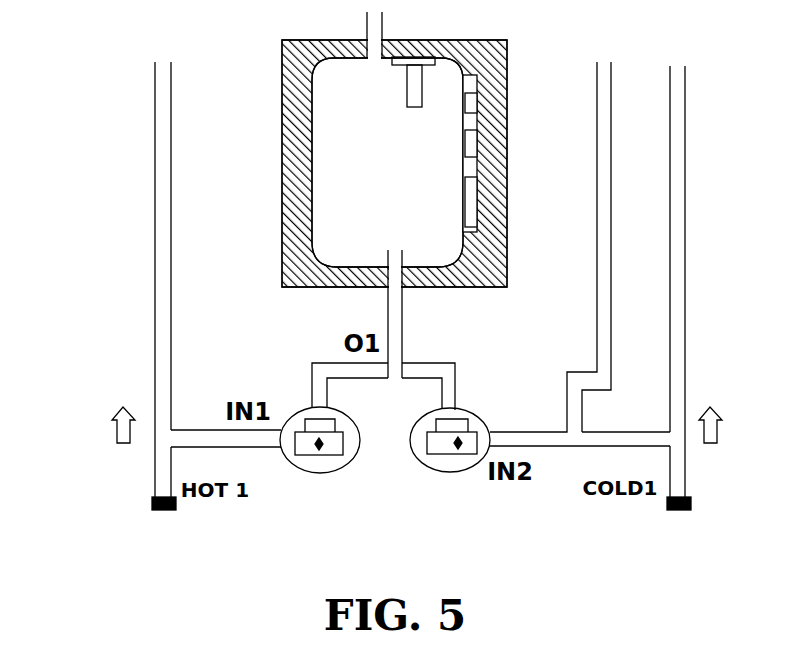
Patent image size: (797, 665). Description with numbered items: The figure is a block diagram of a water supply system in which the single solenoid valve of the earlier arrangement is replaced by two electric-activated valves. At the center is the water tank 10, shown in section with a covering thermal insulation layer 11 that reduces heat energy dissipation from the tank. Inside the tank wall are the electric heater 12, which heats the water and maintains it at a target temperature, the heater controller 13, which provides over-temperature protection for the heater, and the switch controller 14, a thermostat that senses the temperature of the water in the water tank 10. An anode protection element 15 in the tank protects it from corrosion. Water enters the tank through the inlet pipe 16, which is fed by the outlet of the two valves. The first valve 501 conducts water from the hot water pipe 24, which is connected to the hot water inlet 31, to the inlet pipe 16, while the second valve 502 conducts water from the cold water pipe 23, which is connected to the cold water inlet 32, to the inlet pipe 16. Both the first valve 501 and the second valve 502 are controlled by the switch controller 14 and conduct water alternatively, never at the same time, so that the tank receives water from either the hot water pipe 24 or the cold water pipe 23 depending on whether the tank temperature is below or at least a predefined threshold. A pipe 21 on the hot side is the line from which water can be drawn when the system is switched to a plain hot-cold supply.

The water tank 10 is at (341, 237).
The thermal insulation layer 11 is at (283, 191).
The electric heater 12 is at (507, 226).
The heater controller 13 is at (508, 137).
The switch controller 14 is at (505, 96).
The anode protection element 15 is at (401, 72).
The inlet pipe 16 is at (391, 250).
The pipe 21 is at (156, 288).
The cold water pipe 23 is at (672, 406).
The hot water pipe 24 is at (156, 443).
The hot water inlet 31 is at (152, 510).
The cold water inlet 32 is at (690, 510).
The first valve 501 is at (318, 461).
The second valve 502 is at (452, 461).